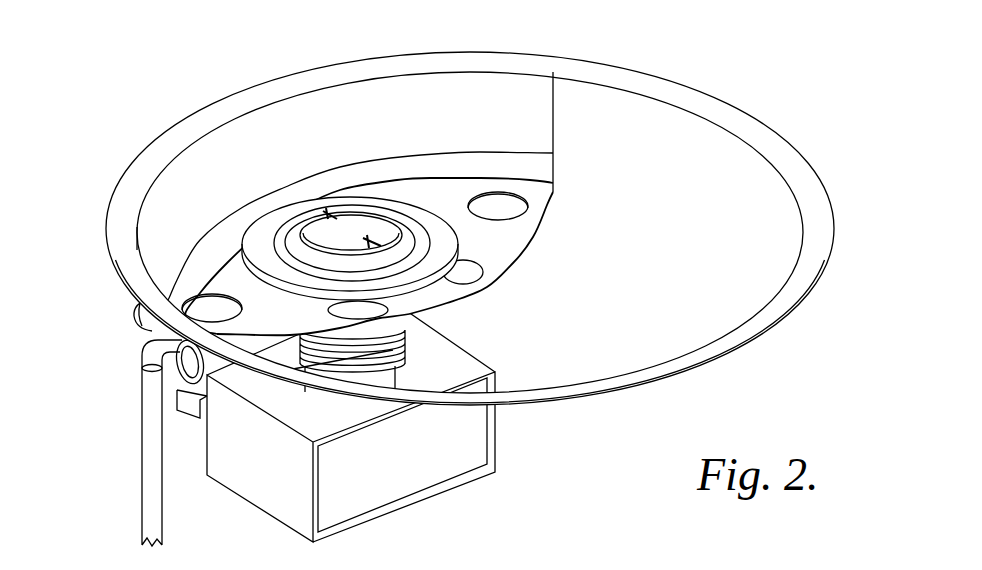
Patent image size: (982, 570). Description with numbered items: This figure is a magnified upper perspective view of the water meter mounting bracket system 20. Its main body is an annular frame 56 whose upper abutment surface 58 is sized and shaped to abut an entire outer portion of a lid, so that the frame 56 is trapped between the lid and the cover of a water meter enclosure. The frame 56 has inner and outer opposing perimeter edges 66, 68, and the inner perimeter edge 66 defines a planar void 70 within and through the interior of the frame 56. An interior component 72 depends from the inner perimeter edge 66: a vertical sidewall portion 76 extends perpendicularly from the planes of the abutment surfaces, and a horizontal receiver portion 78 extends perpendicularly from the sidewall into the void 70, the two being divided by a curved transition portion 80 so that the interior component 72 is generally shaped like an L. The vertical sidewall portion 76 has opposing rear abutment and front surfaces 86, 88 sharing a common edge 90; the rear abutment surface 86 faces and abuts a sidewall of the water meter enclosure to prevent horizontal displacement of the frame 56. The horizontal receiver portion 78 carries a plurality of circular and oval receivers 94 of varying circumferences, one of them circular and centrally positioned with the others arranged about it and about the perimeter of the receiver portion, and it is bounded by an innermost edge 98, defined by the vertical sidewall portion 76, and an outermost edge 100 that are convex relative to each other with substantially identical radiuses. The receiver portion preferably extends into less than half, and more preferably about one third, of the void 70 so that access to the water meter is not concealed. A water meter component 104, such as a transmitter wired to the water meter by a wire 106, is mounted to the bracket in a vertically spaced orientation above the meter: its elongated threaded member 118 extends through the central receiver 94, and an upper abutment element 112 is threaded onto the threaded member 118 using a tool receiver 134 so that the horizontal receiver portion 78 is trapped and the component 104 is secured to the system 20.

The water meter mounting bracket system 20 is at (195, 53).
The annular frame 56 is at (475, 220).
The upper abutment surface 58 is at (820, 218).
The inner perimeter edge 66 is at (798, 258).
The outer perimeter edge 68 is at (823, 273).
The planar void 70 is at (750, 183).
The interior component 72 is at (349, 180).
The vertical sidewall portion 76 is at (522, 124).
The horizontal receiver portion 78 is at (503, 239).
The transition portion 80 is at (536, 169).
The rear abutment surface 86 is at (138, 313).
The front surface 88 is at (537, 100).
The common edge 90 is at (555, 115).
The receivers 94 is at (211, 305).
The disc peripheral edge 98 is at (533, 183).
The outermost edge 100 is at (513, 267).
The water meter component 104 is at (482, 490).
The wire 106 is at (152, 478).
The upper abutment element 112 is at (264, 224).
The elongated threaded member 118 is at (397, 348).
The tool receiver 134 is at (371, 241).